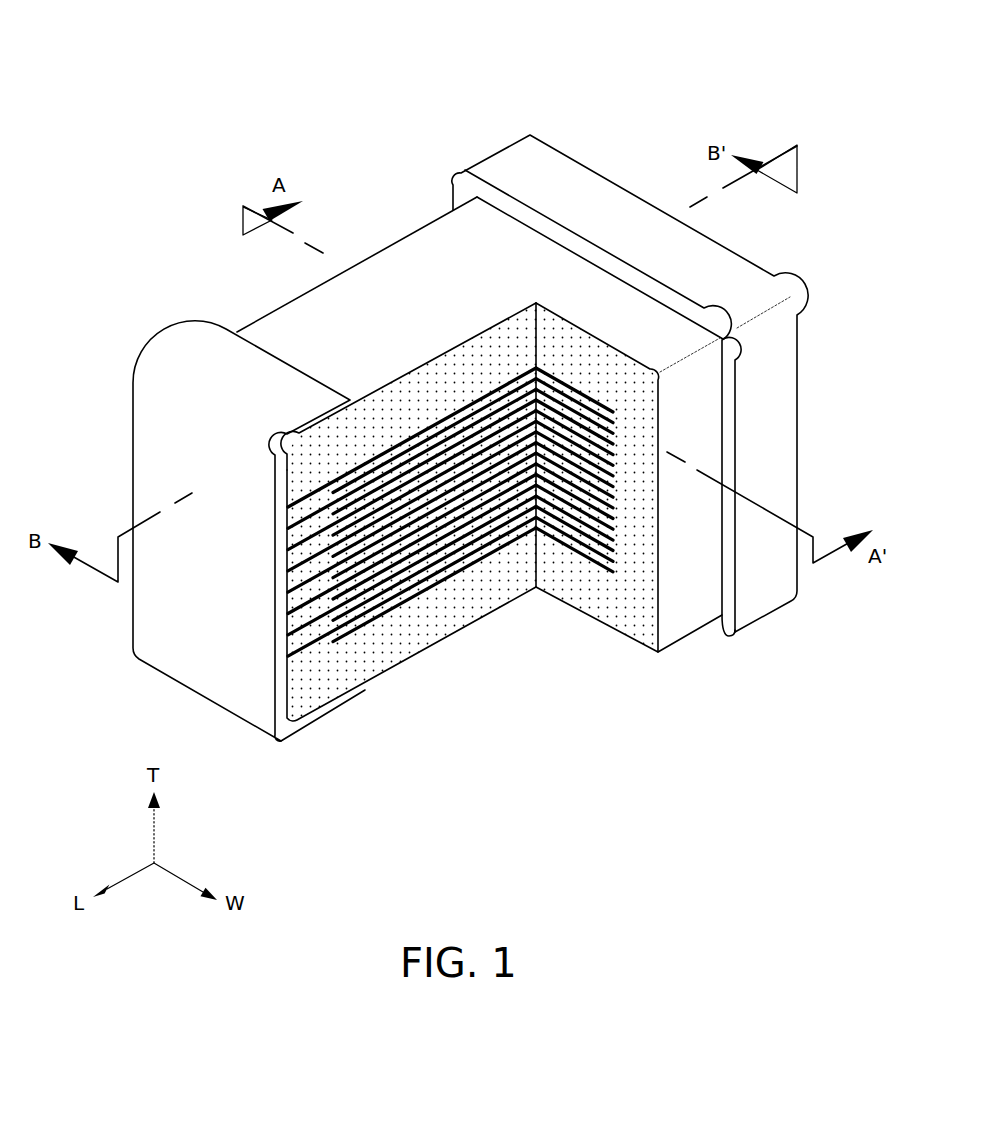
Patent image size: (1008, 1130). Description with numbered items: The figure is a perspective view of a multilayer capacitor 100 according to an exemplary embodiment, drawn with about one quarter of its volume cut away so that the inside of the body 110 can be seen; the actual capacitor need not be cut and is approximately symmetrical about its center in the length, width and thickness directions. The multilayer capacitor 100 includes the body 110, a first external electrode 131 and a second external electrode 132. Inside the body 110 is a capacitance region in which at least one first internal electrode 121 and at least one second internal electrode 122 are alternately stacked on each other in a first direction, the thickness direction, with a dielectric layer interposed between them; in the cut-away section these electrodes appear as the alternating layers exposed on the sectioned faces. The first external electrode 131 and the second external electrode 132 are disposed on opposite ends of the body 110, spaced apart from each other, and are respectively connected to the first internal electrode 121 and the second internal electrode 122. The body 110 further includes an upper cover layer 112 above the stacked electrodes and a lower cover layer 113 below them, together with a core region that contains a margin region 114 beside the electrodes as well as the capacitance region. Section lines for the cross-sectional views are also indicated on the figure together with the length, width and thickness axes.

The multilayer capacitor 100 is at (327, 36).
The body 110 is at (504, 228).
The upper cover layer 112 is at (432, 397).
The lower cover layer 113 is at (427, 628).
The margin region 114 is at (642, 582).
The first internal electrode 121 is at (300, 498).
The second internal electrode 122 is at (360, 632).
The first external electrode 131 is at (192, 365).
The second external electrode 132 is at (565, 177).